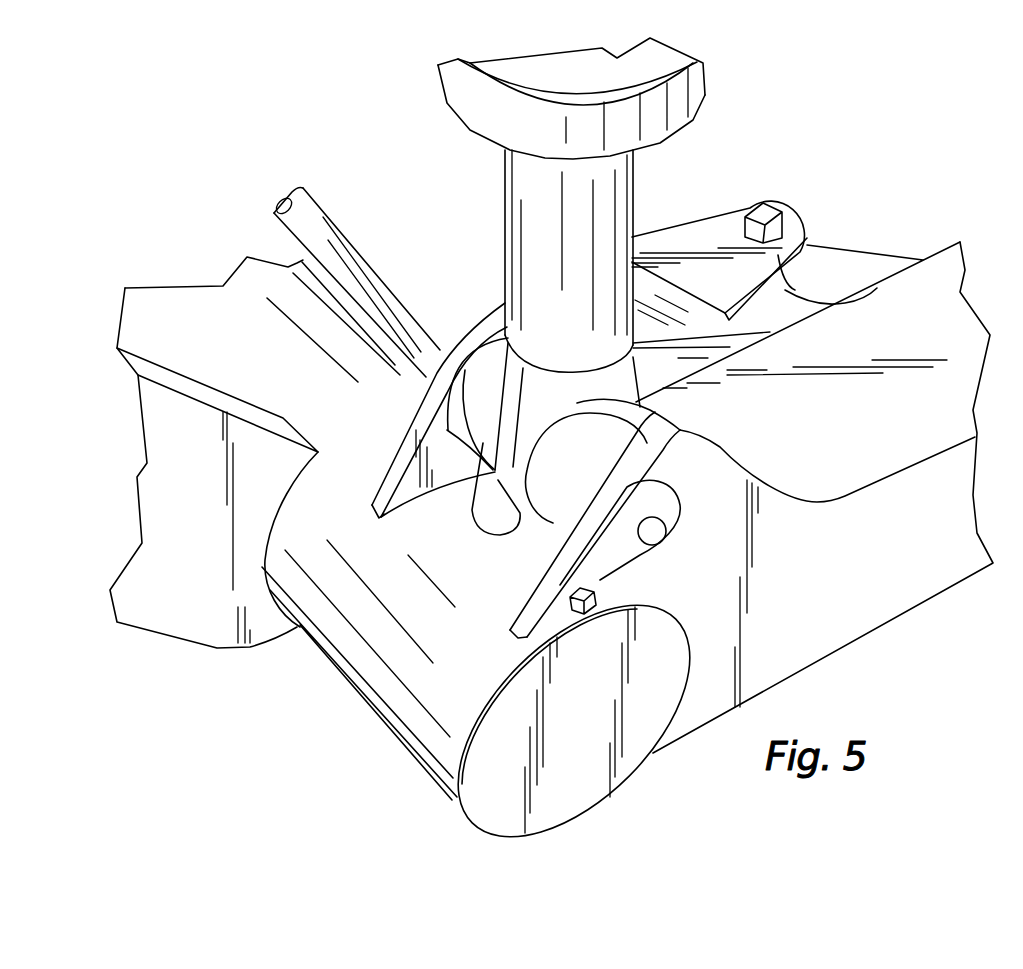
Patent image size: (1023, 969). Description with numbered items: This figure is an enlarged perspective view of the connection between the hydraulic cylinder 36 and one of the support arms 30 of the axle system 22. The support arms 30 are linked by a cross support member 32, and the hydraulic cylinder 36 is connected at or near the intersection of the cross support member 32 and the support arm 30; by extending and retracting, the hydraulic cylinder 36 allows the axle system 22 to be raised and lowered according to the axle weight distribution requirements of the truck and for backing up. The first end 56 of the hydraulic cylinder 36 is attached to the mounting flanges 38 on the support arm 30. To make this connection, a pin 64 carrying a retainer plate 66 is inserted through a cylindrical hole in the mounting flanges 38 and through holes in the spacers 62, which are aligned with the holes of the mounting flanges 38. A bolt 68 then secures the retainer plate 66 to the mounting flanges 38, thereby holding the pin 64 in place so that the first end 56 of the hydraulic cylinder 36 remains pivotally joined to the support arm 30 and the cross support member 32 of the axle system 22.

The axle system 22 is at (807, 185).
The support arm 30 is at (969, 288).
The cross support member 32 is at (481, 810).
The hydraulic cylinder 36 is at (432, 102).
The mounting flange 38 is at (498, 332).
The first end 56 is at (515, 209).
The spacer 62 is at (495, 535).
The pin 64 is at (653, 533).
The retainer plate 66 is at (680, 516).
The bolt 68 is at (582, 608).